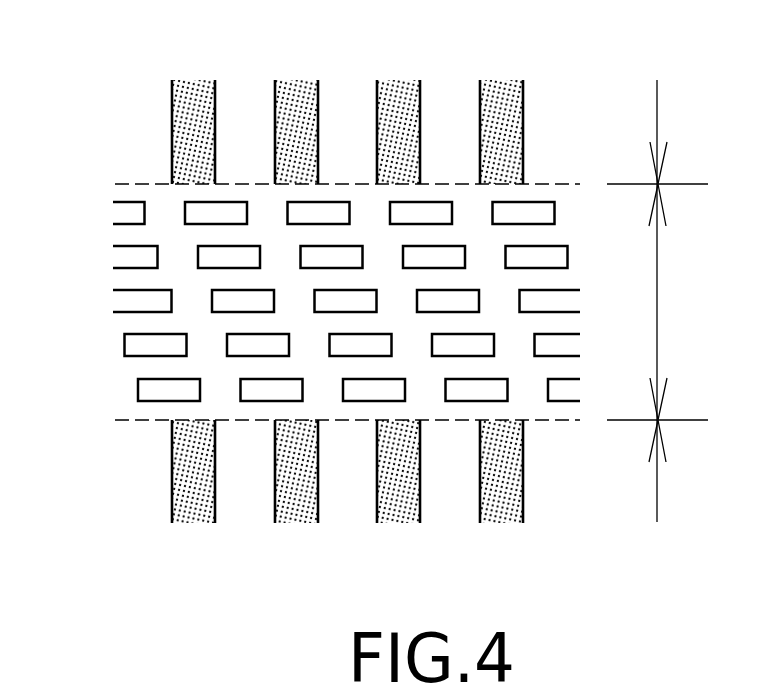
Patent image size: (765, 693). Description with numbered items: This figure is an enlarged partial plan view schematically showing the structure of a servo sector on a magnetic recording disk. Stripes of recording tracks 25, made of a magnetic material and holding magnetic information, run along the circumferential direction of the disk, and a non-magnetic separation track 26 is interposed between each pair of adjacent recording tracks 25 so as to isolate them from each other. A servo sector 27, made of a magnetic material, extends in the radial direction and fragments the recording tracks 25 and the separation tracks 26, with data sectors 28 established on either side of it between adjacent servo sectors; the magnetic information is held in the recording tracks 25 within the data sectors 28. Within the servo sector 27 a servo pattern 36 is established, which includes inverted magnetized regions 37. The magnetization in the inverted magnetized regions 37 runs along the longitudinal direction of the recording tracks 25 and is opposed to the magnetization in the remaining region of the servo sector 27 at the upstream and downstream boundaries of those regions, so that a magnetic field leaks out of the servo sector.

The recording track 25 is at (147, 95).
The separation track 26 is at (295, 82).
The servo sector 27 is at (685, 302).
The data sector 28 is at (660, 301).
The servo pattern 36 is at (120, 245).
The inverted magnetized region 37 is at (117, 268).